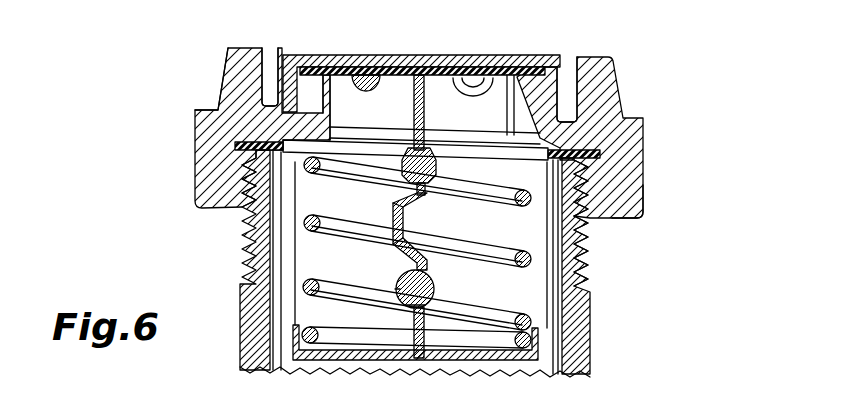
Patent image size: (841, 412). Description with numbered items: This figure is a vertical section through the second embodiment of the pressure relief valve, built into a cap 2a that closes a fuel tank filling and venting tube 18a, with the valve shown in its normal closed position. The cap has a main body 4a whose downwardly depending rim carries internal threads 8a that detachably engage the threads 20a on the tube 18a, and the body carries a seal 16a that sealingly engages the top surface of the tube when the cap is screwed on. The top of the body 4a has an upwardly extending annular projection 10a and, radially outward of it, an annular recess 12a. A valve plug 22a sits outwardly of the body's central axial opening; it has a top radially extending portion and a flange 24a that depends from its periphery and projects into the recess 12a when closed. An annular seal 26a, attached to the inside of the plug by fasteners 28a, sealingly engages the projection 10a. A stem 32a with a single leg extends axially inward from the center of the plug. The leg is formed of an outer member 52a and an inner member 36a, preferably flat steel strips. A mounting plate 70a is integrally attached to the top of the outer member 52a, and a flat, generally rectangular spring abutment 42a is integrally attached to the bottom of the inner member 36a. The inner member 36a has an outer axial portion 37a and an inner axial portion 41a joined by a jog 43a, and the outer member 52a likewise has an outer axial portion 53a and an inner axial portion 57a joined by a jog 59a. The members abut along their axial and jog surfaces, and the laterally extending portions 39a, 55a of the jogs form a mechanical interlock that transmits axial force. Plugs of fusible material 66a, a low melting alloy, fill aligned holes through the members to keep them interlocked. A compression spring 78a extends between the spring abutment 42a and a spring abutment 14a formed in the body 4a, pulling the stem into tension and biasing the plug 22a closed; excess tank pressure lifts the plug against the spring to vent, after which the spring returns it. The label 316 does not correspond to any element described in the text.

The cap 2a is at (628, 92).
The main body 4a is at (645, 118).
The internal threads 8a is at (620, 198).
The annular projection 10a is at (566, 118).
The annular recess 12a is at (270, 72).
The spring abutment 14a is at (197, 128).
The seal 16a is at (612, 152).
The tank filling and venting tube 18a is at (592, 332).
The threads 20a is at (592, 235).
The valve plug 22a is at (318, 60).
The flange 24a is at (218, 93).
The annular seal 26a is at (496, 70).
The fasteners 28a is at (382, 70).
The stem 32a is at (382, 262).
The inner member 36a is at (440, 312).
The outer axial portion 37a is at (458, 190).
The laterally extending portion 39a is at (468, 242).
The inner axial portion 41a is at (432, 360).
The spring abutment 42a is at (512, 360).
The jog 43a is at (424, 222).
The outer member 52a is at (455, 93).
The outer axial portion 53a is at (410, 100).
The laterally extending portion 55a is at (400, 254).
The inner axial portion 57a is at (425, 320).
The jog 59a is at (398, 213).
The fusible material 66a is at (393, 290).
The mounting plate 70a is at (419, 70).
The compression spring 78a is at (305, 295).
The sheet reference 316 is at (482, 16).